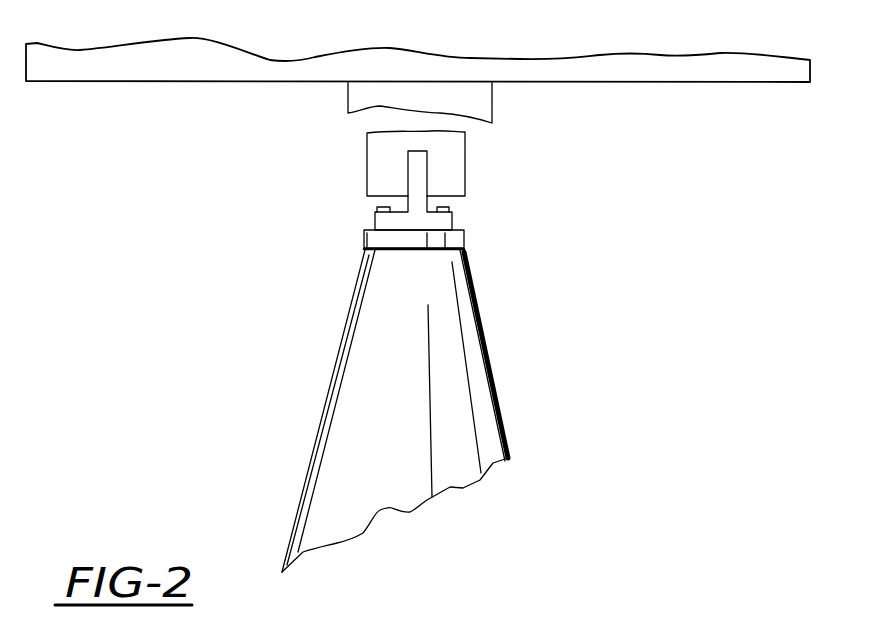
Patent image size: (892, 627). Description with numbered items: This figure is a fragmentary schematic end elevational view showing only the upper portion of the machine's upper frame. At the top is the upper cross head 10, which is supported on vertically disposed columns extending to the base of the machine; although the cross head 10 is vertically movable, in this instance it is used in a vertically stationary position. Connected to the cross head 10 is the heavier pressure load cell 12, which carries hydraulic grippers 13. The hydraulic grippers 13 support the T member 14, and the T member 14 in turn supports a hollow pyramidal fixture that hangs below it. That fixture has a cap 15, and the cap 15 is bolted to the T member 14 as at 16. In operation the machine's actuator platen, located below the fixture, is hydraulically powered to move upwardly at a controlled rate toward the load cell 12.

The upper cross head 10 is at (715, 73).
The load cell 12 is at (478, 102).
The hydraulic grippers 13 is at (452, 163).
The T member 14 is at (392, 220).
The cap 15 is at (455, 238).
The bolts 16 is at (449, 205).